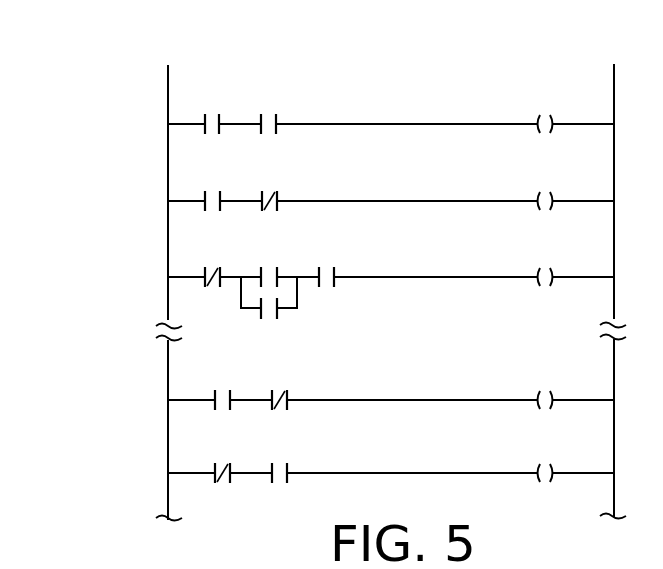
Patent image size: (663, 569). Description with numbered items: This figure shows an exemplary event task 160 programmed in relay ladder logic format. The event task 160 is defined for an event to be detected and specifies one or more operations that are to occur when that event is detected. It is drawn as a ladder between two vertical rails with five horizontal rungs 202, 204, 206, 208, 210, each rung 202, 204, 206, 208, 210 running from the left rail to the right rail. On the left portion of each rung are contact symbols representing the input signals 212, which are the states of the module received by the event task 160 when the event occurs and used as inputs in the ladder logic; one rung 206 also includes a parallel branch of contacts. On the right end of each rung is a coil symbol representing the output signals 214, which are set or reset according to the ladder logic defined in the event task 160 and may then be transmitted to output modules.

The event task 160 is at (118, 60).
The first rung 202 is at (156, 124).
The second rung 204 is at (156, 201).
The third rung 206 is at (156, 277).
The fourth rung 208 is at (156, 400).
The fifth rung 210 is at (156, 473).
The input signals 212 is at (292, 105).
The output signals 214 is at (581, 104).